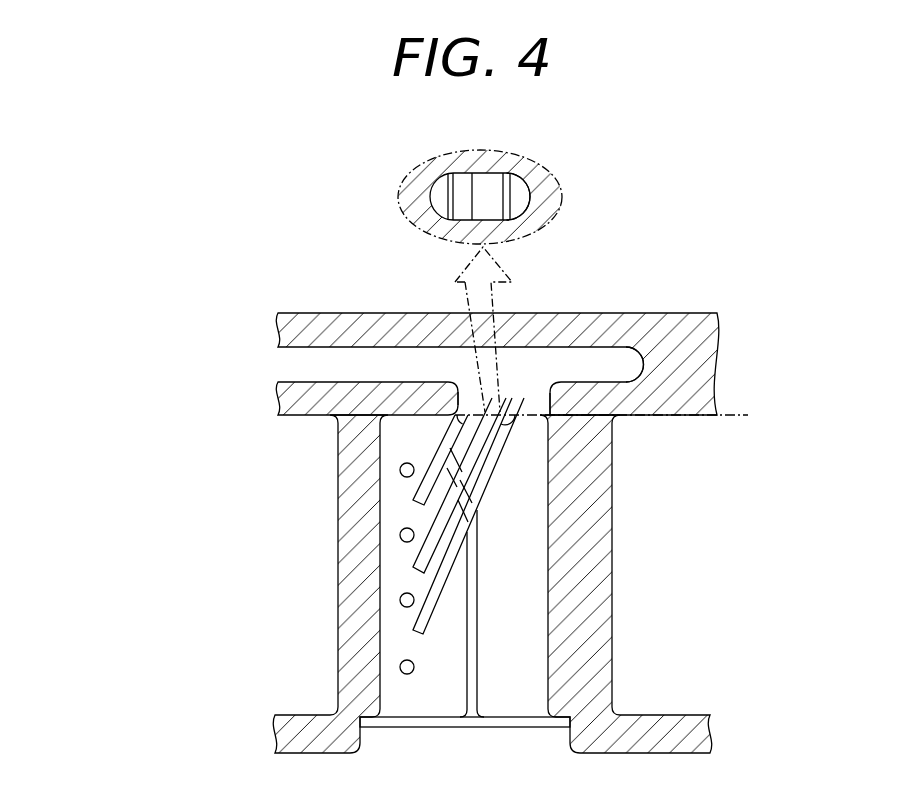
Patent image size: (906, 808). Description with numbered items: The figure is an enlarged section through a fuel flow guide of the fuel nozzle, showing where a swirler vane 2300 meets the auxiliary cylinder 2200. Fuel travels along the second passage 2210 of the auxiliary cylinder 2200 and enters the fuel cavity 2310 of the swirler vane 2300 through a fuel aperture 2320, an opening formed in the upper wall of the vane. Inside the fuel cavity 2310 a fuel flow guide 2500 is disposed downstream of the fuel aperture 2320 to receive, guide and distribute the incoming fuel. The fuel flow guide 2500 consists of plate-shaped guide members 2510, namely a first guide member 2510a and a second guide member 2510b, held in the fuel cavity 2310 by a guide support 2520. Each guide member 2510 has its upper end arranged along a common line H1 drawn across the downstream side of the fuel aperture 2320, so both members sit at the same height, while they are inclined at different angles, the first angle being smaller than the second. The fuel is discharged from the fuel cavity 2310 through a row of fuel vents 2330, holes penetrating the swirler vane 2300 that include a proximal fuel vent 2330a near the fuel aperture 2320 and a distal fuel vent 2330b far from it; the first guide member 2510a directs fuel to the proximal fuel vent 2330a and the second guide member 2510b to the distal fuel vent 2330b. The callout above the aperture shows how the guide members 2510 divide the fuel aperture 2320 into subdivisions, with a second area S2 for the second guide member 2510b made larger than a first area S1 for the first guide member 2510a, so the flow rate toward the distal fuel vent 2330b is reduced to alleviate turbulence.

The auxiliary cylinder 2200 is at (497, 336).
The second passage 2210 is at (352, 364).
The fuel aperture 2320 is at (516, 398).
The swirler vane 2300 is at (437, 584).
The fuel cavity 2310 is at (526, 594).
The fuel vents 2330 is at (288, 568).
The proximal fuel vent 2330a is at (398, 472).
The distal fuel vent 2330b is at (400, 665).
The fuel flow guide 2500 is at (503, 412).
The guide members 2510 is at (465, 370).
The first guide member 2510a is at (447, 447).
The second guide member 2510b is at (507, 455).
The guide support 2520 is at (473, 563).
The line drawn across the downstream side of the fuel aperture H1 is at (619, 415).
The first area S1 is at (437, 198).
The second area S2 is at (523, 197).